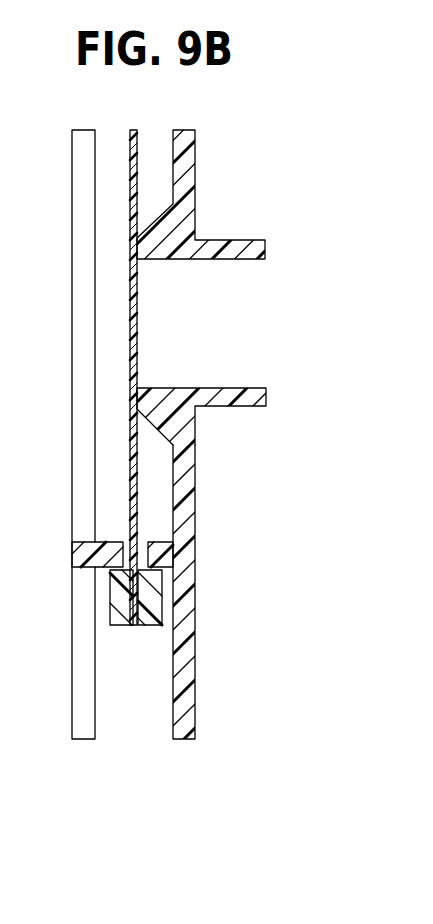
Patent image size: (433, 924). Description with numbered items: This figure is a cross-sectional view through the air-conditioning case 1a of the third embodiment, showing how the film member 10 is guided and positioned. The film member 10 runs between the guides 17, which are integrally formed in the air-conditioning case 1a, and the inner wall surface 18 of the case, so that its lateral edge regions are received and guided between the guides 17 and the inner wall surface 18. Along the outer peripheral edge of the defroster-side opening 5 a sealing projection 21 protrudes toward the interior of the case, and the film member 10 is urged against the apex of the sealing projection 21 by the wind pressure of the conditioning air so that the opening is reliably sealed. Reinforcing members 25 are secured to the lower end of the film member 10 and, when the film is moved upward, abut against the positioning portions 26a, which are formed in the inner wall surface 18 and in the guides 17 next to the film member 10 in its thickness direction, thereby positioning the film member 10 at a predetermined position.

The film member 10 is at (136, 195).
The guides 17 is at (72, 339).
The air-conditioning case 1a is at (196, 186).
The defroster-side opening 5 is at (228, 334).
The sealing projection 21 is at (145, 397).
The inner wall surface 18 is at (173, 680).
The positioning portions 26a is at (115, 555).
The reinforcing members 25 is at (122, 600).